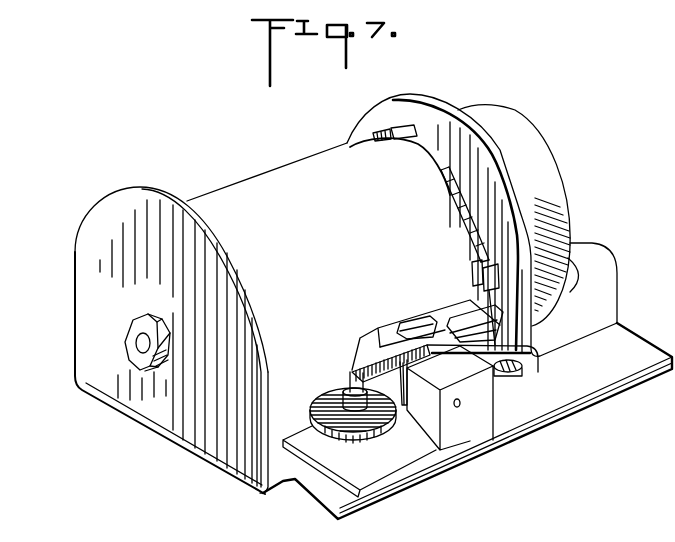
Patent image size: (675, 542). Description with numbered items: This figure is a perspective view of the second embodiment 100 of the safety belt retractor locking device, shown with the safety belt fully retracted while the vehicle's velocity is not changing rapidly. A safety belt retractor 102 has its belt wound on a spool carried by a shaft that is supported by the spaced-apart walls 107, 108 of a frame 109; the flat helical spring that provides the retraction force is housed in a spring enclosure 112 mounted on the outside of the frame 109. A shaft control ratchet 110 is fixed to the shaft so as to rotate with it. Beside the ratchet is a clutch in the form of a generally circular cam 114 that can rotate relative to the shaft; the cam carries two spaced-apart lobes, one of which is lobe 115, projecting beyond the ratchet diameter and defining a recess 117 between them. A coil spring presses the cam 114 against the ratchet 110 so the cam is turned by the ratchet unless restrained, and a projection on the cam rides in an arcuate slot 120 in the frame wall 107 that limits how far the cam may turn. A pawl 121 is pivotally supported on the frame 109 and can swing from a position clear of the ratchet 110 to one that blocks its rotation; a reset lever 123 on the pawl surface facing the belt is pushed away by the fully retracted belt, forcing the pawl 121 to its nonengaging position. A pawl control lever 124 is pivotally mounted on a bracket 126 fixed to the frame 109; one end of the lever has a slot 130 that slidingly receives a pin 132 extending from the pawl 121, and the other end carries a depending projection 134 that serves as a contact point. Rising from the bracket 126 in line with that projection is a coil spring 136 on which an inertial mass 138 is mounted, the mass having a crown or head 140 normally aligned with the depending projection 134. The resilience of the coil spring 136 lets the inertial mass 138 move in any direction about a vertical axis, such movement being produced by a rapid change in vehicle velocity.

The second embodiment 100 is at (212, 157).
The safety belt retractor 102 is at (102, 232).
The frame wall 107 is at (395, 97).
The frame wall 108 is at (120, 190).
The frame 109 is at (437, 94).
The shaft control ratchet 110 is at (372, 134).
The spring enclosure 112 is at (502, 125).
The cam 114 is at (463, 190).
The lobe 115 is at (487, 277).
The recess 117 is at (487, 284).
The arcuate slot 120 is at (413, 129).
The pawl 121 is at (467, 341).
The reset lever 123 is at (410, 323).
The pawl control lever 124 is at (377, 338).
The bracket 126 is at (478, 423).
The slot 130 is at (500, 373).
The pin 132 is at (535, 368).
The depending projection 134 is at (347, 372).
The coil spring 136 is at (362, 442).
The inertial mass 138 is at (348, 378).
The head 140 is at (327, 397).